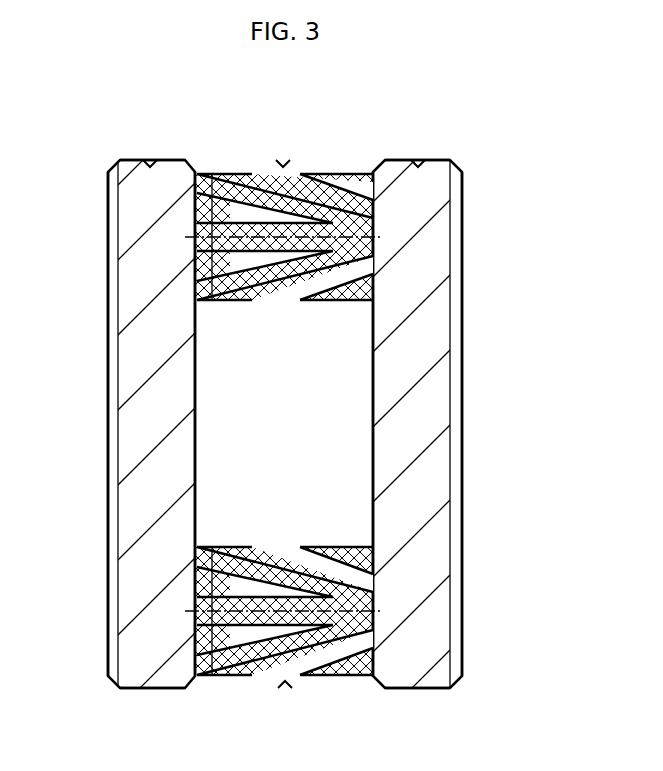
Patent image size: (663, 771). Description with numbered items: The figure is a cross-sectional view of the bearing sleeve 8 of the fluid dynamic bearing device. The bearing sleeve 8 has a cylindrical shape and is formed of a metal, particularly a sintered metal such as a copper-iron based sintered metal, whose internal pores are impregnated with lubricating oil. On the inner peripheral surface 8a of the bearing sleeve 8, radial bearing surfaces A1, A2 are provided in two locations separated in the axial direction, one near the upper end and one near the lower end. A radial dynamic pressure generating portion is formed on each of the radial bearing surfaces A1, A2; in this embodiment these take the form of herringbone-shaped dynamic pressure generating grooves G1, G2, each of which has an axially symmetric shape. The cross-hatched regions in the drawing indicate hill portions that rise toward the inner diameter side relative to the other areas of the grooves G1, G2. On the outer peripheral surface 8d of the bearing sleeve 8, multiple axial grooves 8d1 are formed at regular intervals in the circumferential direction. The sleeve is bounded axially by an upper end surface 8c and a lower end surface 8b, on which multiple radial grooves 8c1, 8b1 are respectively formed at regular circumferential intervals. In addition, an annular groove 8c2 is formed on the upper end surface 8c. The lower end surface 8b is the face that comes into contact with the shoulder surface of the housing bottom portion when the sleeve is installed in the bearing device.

The bearing sleeve 8 is at (498, 142).
The inner peripheral surface 8a is at (376, 346).
The lower end surface 8b is at (152, 688).
The radial groove 8b1 is at (285, 688).
The upper end surface 8c is at (130, 160).
The radial groove 8c1 is at (283, 160).
The annular groove 8c2 is at (150, 160).
The outer peripheral surface 8d is at (108, 362).
The axial groove 8d1 is at (118, 462).
The radial bearing surface A1 is at (284, 230).
The radial bearing surface A2 is at (284, 621).
The dynamic pressure generating groove G1 is at (276, 283).
The dynamic pressure generating groove G2 is at (257, 600).